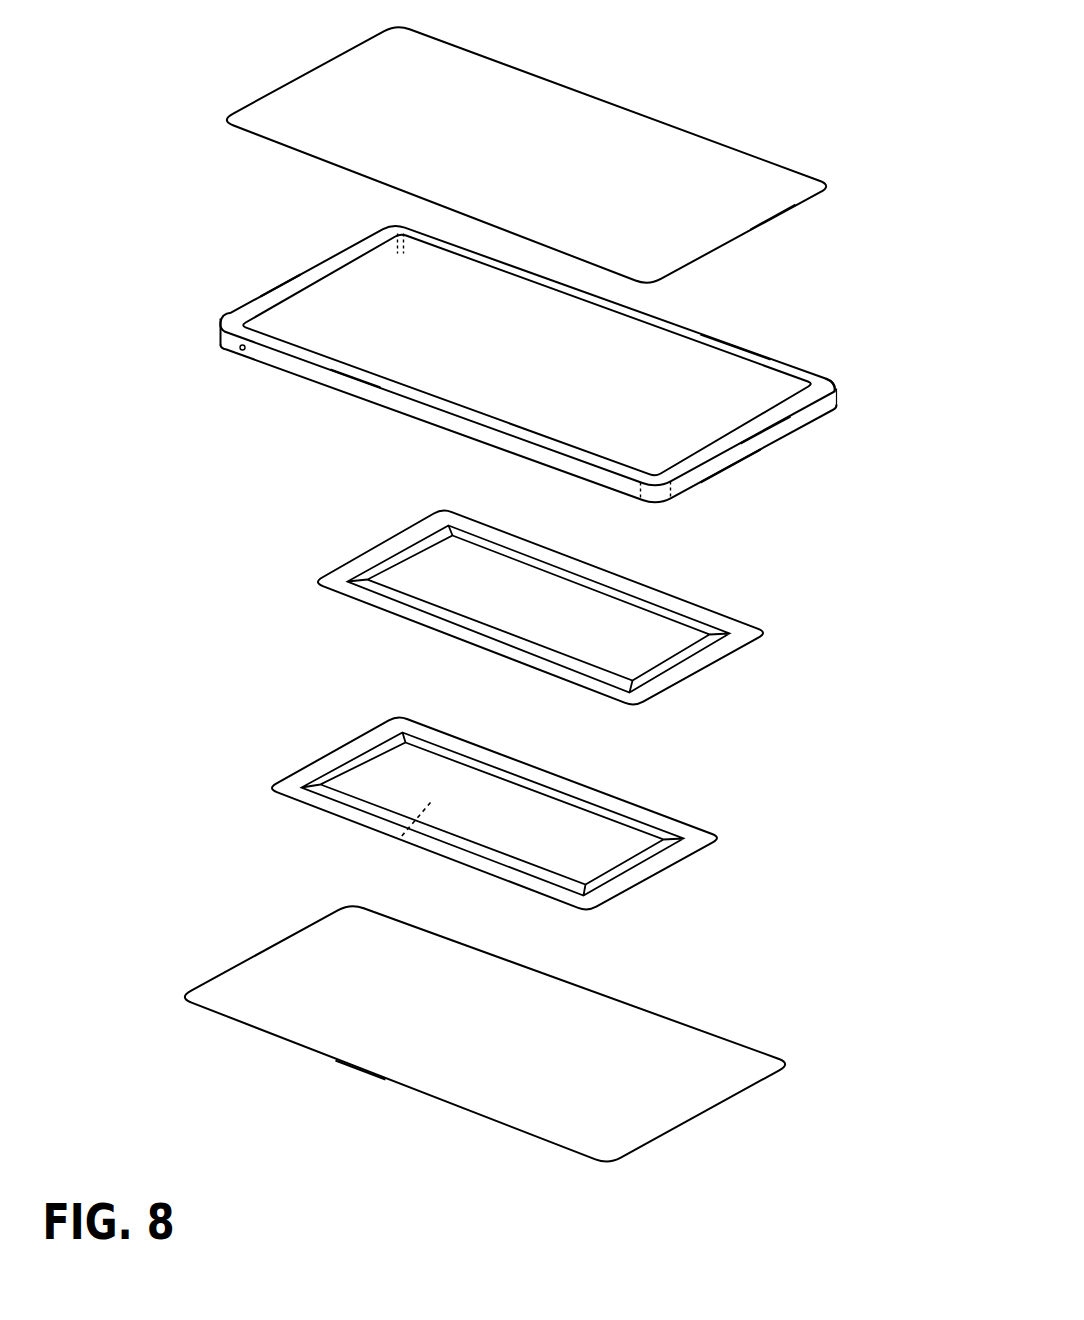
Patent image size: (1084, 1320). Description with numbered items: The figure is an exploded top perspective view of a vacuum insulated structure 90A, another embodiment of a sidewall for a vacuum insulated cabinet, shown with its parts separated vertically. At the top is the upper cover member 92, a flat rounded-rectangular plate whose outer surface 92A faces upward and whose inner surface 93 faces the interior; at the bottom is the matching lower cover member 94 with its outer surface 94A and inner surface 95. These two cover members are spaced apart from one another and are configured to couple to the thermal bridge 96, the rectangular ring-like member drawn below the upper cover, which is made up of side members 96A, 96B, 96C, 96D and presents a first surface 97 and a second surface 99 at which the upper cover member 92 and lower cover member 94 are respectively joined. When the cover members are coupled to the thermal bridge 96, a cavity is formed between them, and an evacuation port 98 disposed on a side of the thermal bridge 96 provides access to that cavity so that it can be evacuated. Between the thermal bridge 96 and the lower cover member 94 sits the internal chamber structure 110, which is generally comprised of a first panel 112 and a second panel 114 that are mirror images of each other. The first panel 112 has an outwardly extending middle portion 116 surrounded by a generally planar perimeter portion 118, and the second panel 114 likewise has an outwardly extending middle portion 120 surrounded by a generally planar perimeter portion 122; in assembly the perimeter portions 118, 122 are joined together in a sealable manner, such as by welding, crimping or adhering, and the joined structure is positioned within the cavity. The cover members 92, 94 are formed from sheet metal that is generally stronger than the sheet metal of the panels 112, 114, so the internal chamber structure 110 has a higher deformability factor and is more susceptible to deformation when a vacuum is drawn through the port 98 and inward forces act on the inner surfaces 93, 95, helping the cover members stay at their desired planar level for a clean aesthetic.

The vacuum insulated structure 90A is at (742, 75).
The upper cover member 92 is at (592, 85).
The outer surface 92A is at (506, 164).
The inner surface 93 is at (765, 228).
The thermal bridge 96 is at (847, 413).
The side member 96A is at (735, 340).
The side member 96B is at (757, 448).
The side member 96C is at (352, 390).
The side member 96D is at (277, 283).
The first surface 97 is at (824, 387).
The evacuation port 98 is at (238, 347).
The second surface 99 is at (727, 480).
The internal chamber structure 110 is at (853, 572).
The first panel 112 is at (320, 552).
The middle portion 116 is at (427, 578).
The perimeter portion 118 is at (402, 608).
The second panel 114 is at (255, 775).
The middle portion 120 is at (397, 842).
The perimeter portion 122 is at (327, 807).
The lower cover member 94 is at (408, 1105).
The outer surface 94A is at (354, 1079).
The inner surface 95 is at (506, 1059).